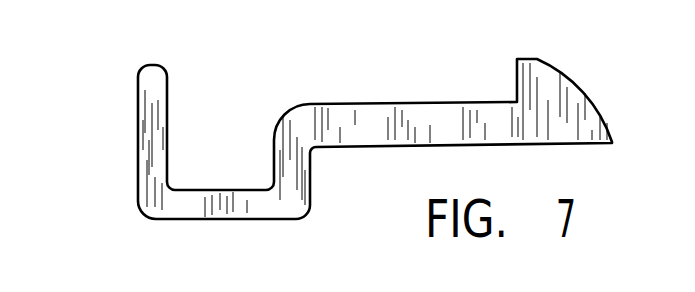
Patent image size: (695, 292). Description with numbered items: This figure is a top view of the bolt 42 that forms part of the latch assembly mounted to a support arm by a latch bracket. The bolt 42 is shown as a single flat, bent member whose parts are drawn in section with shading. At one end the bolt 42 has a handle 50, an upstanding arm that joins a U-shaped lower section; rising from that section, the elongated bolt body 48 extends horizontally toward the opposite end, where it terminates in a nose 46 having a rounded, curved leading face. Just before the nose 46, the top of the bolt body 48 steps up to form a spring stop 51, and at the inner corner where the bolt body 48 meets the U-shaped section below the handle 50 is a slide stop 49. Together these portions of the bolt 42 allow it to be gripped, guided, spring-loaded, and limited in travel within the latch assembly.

The bolt 42 is at (104, 138).
The nose 46 is at (585, 96).
The bolt body 48 is at (370, 103).
The slide stop 49 is at (310, 182).
The handle 50 is at (167, 117).
The spring stop 51 is at (516, 75).